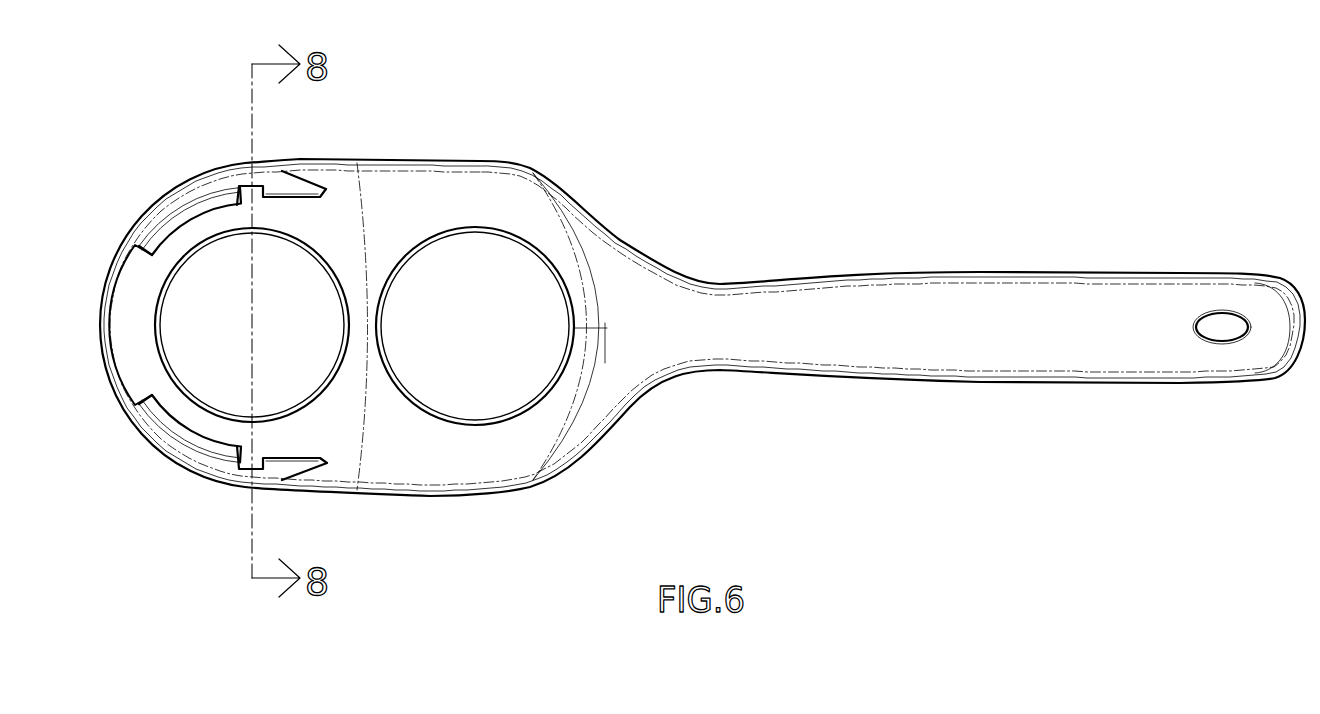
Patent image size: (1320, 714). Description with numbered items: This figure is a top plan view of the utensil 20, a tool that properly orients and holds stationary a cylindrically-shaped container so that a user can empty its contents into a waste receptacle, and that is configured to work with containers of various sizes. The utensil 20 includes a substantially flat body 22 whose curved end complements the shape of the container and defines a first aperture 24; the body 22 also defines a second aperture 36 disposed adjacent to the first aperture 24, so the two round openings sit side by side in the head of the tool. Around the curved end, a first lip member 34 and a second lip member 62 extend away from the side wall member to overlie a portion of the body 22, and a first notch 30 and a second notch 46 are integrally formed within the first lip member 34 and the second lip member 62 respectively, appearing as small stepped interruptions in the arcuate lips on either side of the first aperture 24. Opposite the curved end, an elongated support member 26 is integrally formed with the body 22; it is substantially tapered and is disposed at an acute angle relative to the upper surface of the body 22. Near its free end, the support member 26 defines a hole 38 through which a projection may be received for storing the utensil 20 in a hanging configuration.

The utensil 20 is at (707, 438).
The body 22 is at (105, 375).
The first aperture 24 is at (295, 290).
The support member 26 is at (1077, 352).
The first notch 30 is at (249, 181).
The first lip member 34 is at (178, 210).
The second aperture 36 is at (450, 287).
The hole 38 is at (1208, 322).
The second notch 46 is at (242, 458).
The second lip member 62 is at (178, 447).